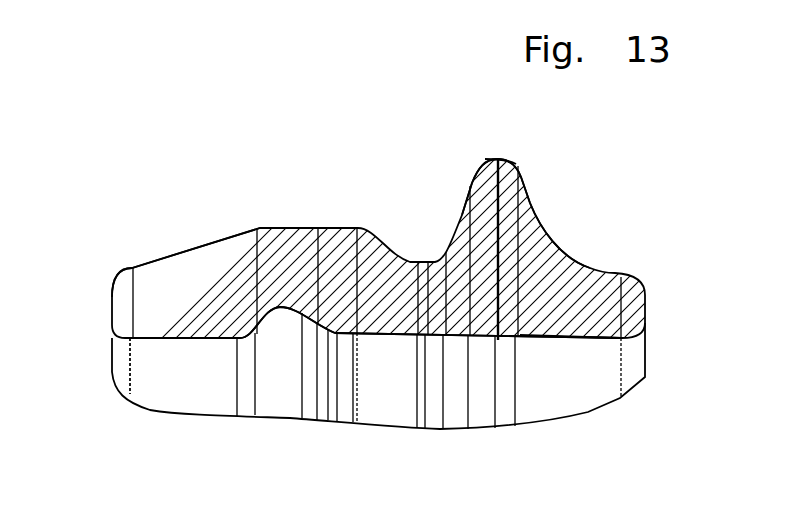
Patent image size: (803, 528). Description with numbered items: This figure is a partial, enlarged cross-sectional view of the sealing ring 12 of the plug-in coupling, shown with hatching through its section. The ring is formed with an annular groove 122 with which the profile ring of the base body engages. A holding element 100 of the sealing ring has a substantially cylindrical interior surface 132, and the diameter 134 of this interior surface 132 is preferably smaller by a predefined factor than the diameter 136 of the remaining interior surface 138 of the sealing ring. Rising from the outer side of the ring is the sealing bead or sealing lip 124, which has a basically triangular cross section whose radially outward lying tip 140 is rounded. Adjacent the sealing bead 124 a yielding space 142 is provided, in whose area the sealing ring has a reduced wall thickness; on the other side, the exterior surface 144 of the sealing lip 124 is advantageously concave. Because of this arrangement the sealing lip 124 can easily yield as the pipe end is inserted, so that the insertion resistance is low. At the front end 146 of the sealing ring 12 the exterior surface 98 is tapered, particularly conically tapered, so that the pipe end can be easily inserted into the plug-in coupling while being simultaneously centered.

The shoe sole / midsole cross-section 12 is at (281, 226).
The exterior surface 98 is at (177, 262).
The holding element 100 is at (253, 332).
The annular groove 122 is at (282, 312).
The sealing bead or sealing lip 124 is at (488, 181).
The interior surface 132 is at (149, 339).
The diameter 134 is at (168, 339).
The diameter 136 is at (386, 336).
The remaining interior surface 138 is at (545, 339).
The tip 140 is at (505, 158).
The yielding space 142 is at (409, 245).
The exterior surface 144 is at (564, 241).
The front end 146 is at (118, 272).